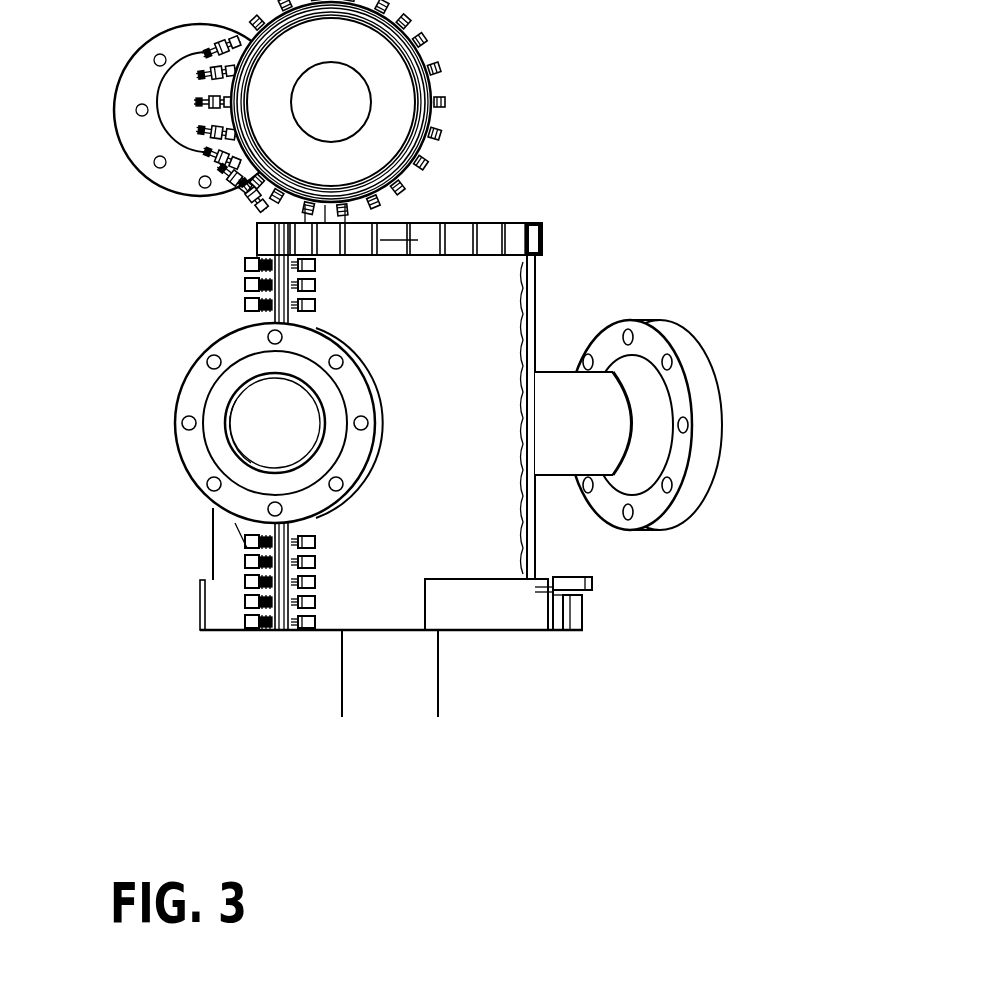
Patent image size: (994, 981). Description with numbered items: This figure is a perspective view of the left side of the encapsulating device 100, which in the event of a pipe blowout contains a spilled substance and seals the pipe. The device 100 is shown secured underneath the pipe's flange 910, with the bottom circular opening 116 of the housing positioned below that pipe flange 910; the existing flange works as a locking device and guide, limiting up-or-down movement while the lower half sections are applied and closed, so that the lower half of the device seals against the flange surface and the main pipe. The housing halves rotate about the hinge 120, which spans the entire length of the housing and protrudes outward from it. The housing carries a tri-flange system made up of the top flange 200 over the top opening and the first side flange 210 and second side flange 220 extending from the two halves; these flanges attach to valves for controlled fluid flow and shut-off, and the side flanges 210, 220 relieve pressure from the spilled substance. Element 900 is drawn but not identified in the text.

The encapsulating device 100 is at (628, 110).
The hinge 120 is at (535, 283).
The bottom circular opening 116 is at (323, 634).
The top flange 200 is at (200, 150).
The first side flange 210 is at (177, 463).
The second side flange 220 is at (666, 316).
The support legs 900 is at (442, 679).
The pipe flange 910 is at (538, 564).